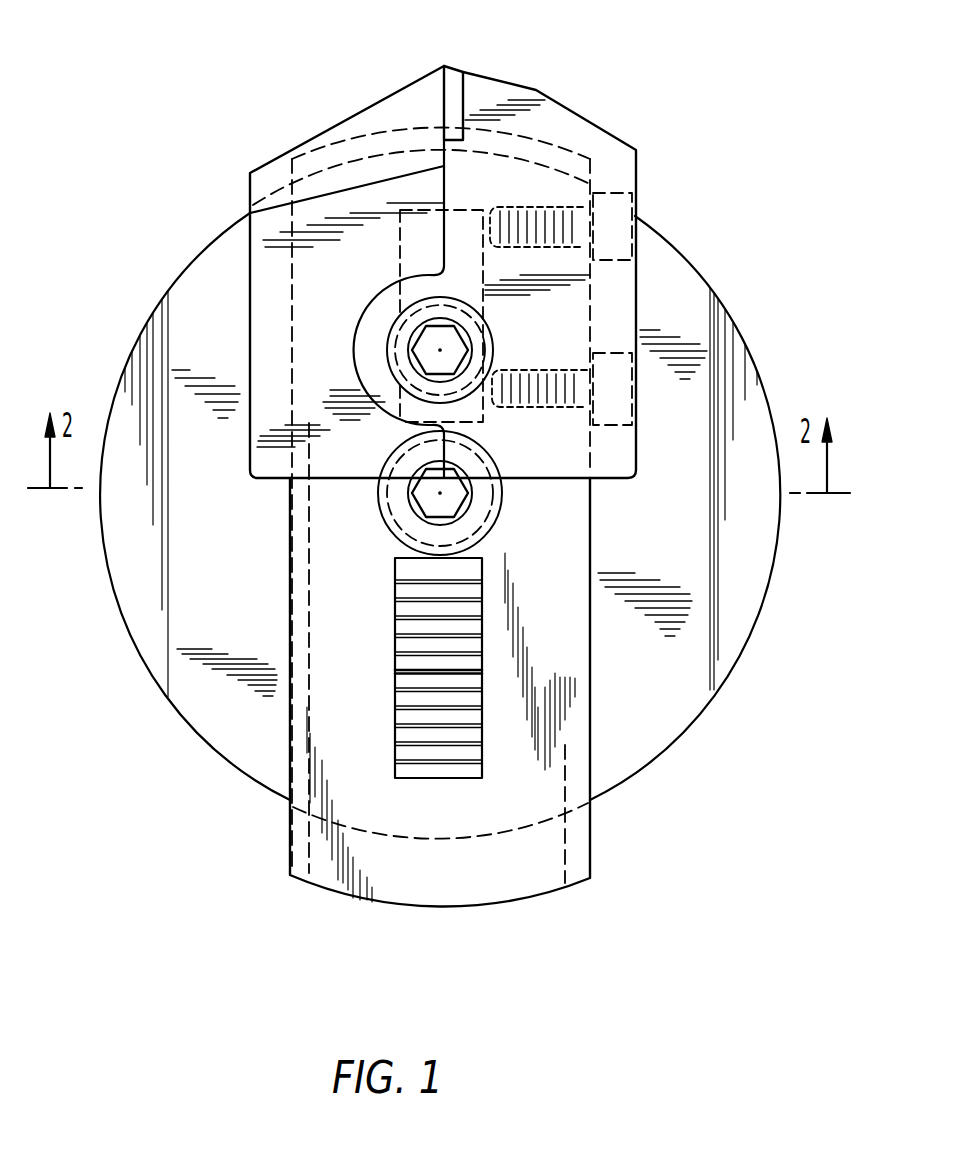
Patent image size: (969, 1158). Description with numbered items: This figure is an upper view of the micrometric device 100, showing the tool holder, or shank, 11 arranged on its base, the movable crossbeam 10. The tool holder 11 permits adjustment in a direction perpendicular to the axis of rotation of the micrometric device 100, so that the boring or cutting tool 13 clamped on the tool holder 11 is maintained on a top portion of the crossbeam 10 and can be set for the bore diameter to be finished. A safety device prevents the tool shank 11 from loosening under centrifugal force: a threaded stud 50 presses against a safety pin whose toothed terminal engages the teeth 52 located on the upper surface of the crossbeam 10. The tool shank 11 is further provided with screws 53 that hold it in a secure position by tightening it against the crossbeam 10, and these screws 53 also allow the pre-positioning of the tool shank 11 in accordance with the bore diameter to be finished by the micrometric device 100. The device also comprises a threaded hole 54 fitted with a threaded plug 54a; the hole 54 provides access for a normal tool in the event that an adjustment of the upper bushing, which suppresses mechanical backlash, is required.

The crossbeam 10 is at (572, 795).
The tool holder 11 is at (590, 110).
The boring or cutting tool 13 is at (453, 68).
The threaded stud 50 is at (424, 347).
The teeth 52 is at (413, 672).
The screws 53 is at (613, 253).
The threaded hole 54 is at (493, 527).
The threaded plug 54a is at (430, 505).
The micrometric device 100 is at (250, 916).